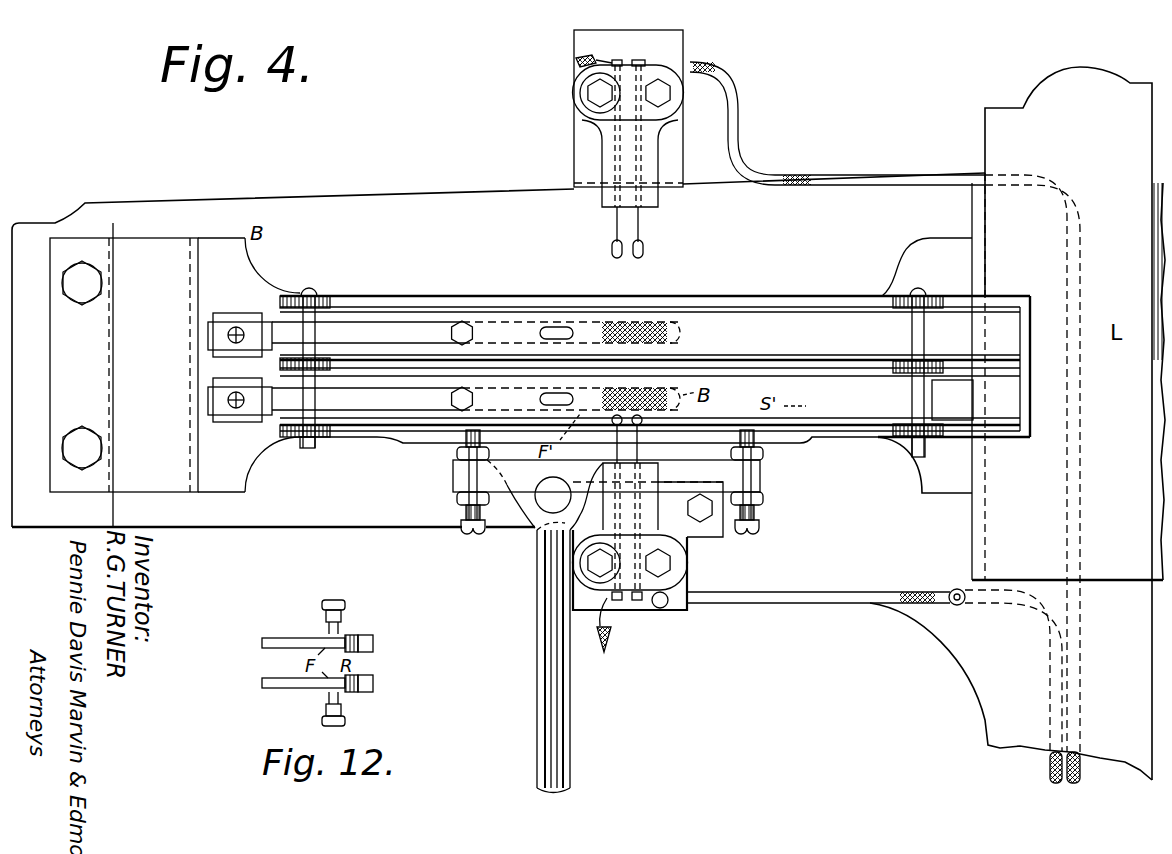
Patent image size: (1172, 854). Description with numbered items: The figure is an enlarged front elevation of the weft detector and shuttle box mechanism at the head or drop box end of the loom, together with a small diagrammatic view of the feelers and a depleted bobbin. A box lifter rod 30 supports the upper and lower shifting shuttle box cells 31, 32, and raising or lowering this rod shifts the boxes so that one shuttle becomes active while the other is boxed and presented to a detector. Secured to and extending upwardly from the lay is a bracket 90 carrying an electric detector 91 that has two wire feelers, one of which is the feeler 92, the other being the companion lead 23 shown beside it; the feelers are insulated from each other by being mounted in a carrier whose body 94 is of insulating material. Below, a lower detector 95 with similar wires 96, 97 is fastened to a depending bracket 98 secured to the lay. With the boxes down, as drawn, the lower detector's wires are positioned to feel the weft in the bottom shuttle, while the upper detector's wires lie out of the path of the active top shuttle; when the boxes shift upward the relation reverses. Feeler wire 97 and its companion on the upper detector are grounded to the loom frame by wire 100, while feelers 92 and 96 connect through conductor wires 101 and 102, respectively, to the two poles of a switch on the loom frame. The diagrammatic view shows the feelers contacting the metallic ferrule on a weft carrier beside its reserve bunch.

The conductor wire 23 is at (615, 226).
The box lifter rod 30 is at (537, 692).
The upper shifting shuttle box cell 31 is at (832, 300).
The lower shifting shuttle box cell 32 is at (842, 430).
The bracket 90 is at (582, 149).
The electric detector 91 is at (650, 153).
The wire feeler 92 is at (641, 226).
The carrier body 94 is at (614, 112).
The lower detector 95 is at (652, 522).
The feeler wire 96 is at (645, 464).
The feeler wire 97 is at (625, 440).
The depending bracket 98 is at (716, 527).
The wire 100 is at (576, 58).
The conductor wire 101 is at (694, 64).
The conductor wire 102 is at (762, 593).